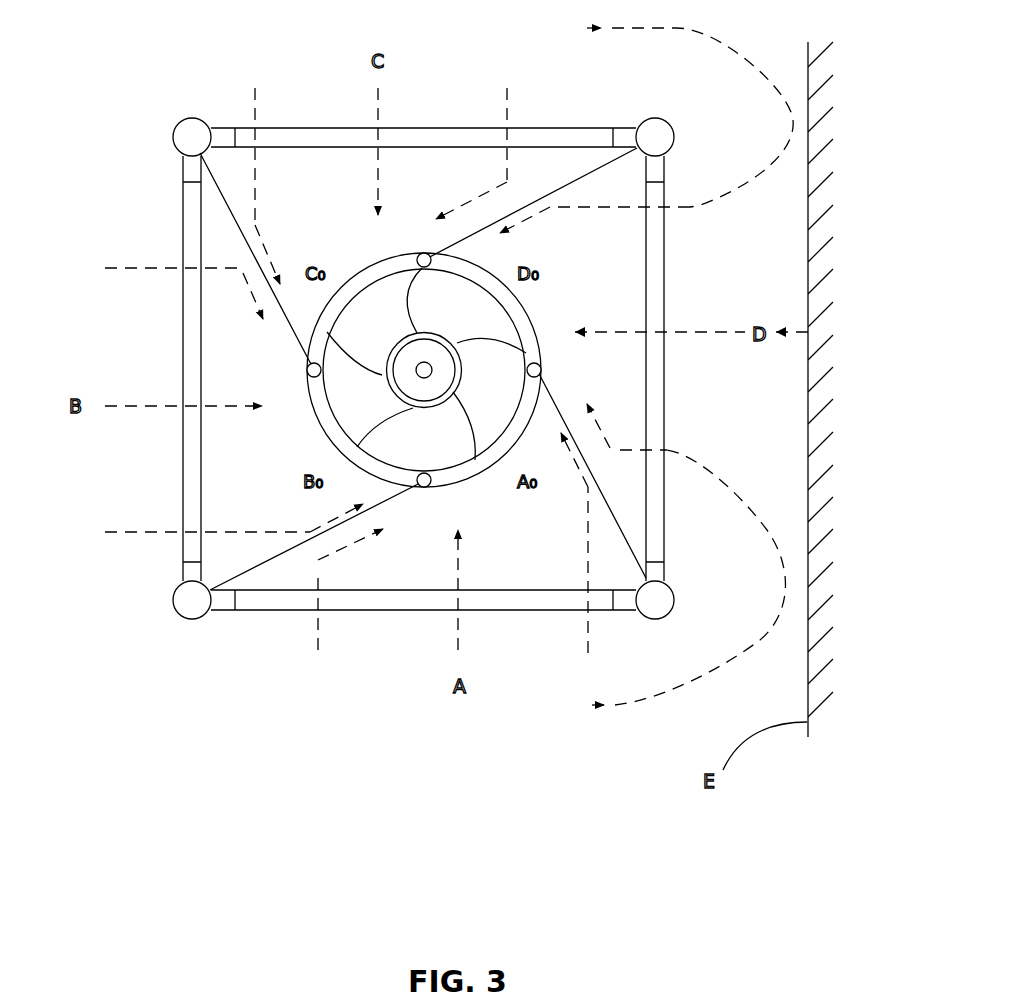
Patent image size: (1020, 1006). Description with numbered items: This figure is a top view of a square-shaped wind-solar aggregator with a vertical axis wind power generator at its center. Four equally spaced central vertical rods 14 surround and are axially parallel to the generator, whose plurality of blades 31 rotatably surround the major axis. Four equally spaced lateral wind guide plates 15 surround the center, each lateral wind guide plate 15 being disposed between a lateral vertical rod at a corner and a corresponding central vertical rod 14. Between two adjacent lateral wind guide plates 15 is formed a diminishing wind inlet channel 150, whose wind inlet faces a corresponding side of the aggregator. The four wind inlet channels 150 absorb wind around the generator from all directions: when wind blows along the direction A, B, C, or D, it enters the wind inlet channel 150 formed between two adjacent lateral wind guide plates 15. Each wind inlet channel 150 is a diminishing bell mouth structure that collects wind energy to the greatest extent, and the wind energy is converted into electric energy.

The central vertical rod 14 is at (423, 487).
The lateral wind guide plate 15 is at (312, 542).
The blade 31 is at (388, 430).
The diminishing wind inlet channel 150 is at (522, 562).